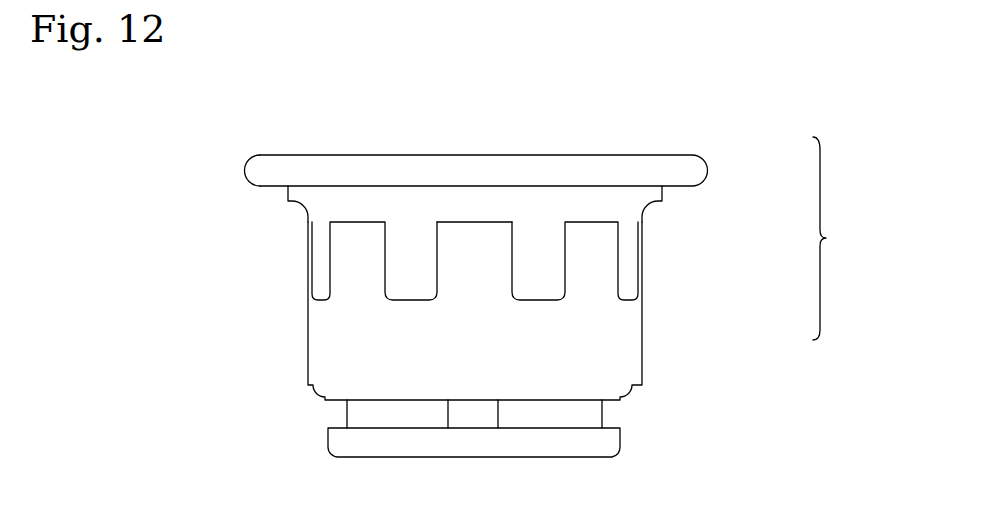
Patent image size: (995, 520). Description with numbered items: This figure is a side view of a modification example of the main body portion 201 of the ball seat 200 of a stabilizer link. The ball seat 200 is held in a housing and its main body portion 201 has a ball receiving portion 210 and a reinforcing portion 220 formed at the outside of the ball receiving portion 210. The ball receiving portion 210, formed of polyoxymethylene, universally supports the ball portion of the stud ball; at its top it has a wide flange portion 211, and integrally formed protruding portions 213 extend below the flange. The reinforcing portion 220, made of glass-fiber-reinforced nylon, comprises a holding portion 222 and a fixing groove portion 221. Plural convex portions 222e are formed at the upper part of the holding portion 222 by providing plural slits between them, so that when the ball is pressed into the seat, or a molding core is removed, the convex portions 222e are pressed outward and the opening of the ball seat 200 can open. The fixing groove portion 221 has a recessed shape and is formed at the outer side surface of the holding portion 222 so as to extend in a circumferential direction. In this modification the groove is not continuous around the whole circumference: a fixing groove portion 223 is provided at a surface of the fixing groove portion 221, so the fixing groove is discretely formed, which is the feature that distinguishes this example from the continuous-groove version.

The ball seat 200 is at (657, 132).
The main body portion 201 is at (846, 238).
The ball receiving portion 210 is at (708, 155).
The flange portion 211 is at (261, 172).
The protruding portions 213 is at (400, 272).
The reinforcing portion 220 is at (665, 345).
The fixing groove portion 221 is at (603, 413).
The holding portion 222 is at (325, 347).
The convex portions 222e is at (485, 243).
The fixing groove portion 223 is at (472, 415).